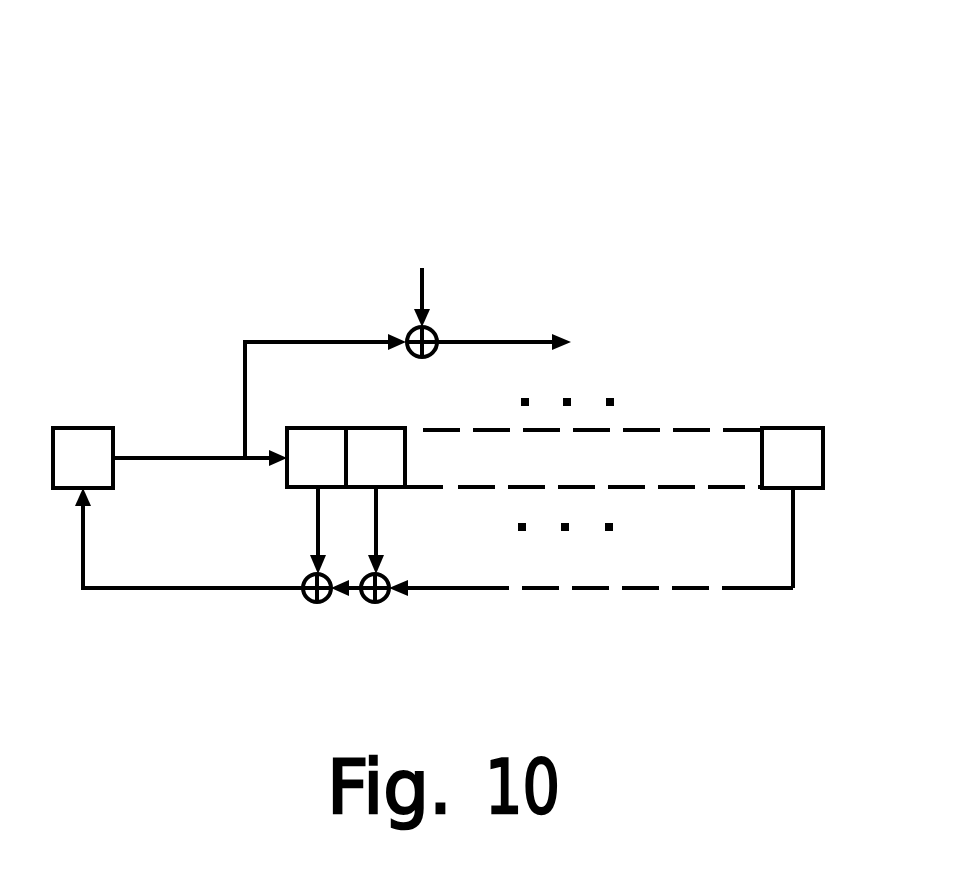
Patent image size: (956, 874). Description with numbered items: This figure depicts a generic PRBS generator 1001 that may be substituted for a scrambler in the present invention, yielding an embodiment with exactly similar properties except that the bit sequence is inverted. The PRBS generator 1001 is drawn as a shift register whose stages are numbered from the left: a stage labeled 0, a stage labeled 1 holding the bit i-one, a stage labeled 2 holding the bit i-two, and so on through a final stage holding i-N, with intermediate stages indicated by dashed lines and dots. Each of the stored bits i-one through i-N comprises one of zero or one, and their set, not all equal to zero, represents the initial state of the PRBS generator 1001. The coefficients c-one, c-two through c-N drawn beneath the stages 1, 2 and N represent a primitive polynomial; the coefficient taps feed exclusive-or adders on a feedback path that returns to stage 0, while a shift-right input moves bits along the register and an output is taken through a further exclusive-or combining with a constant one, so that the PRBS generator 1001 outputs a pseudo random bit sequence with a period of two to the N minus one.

The PRBS generator 1001 is at (629, 136).
The input register stage 0 is at (83, 435).
The register stage 1 is at (316, 434).
The register stage 2 is at (375, 434).